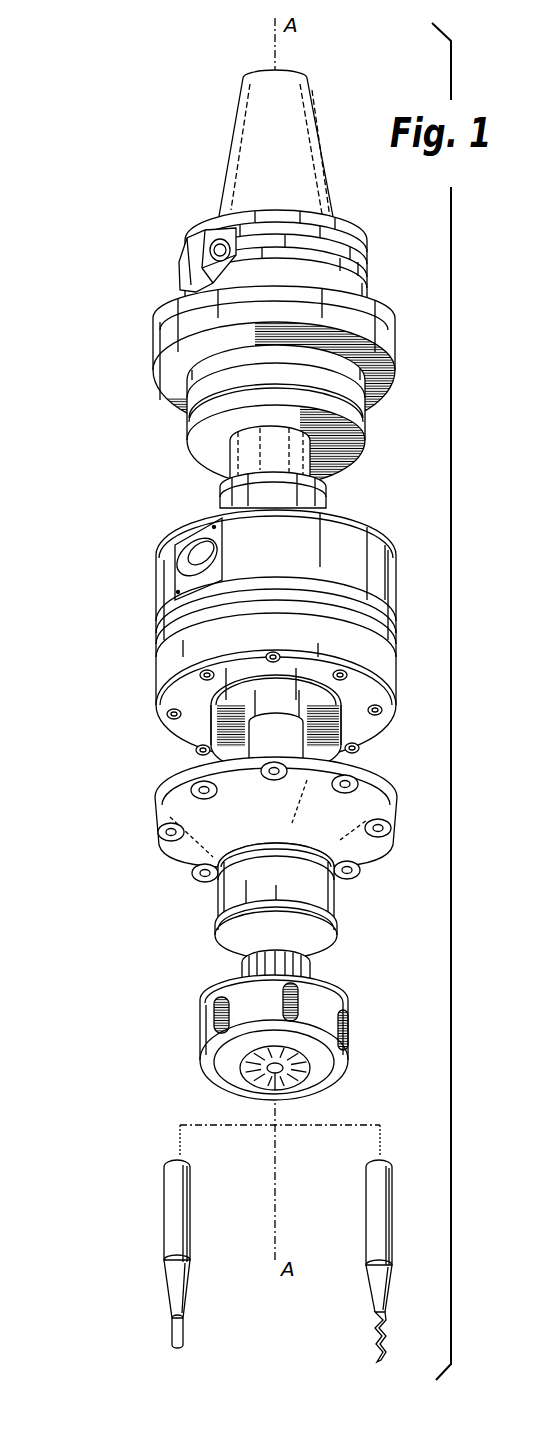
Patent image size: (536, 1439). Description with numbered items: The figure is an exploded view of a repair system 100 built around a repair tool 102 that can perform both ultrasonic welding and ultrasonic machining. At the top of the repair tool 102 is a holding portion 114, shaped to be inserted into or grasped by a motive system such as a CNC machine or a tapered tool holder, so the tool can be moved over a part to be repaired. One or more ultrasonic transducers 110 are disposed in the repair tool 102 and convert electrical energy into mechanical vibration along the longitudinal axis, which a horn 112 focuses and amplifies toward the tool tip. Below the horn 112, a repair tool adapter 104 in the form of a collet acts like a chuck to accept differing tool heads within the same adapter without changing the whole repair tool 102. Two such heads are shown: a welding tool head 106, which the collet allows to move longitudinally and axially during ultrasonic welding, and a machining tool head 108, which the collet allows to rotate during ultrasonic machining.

The repair system 100 is at (110, 233).
The repair tool 102 is at (134, 470).
The repair tool adapter 104 is at (238, 968).
The welding tool head 106 is at (153, 1243).
The machining tool head 108 is at (357, 1240).
The ultrasonic transducer 110 is at (240, 745).
The horn 112 is at (372, 853).
The holding portion 114 is at (166, 253).